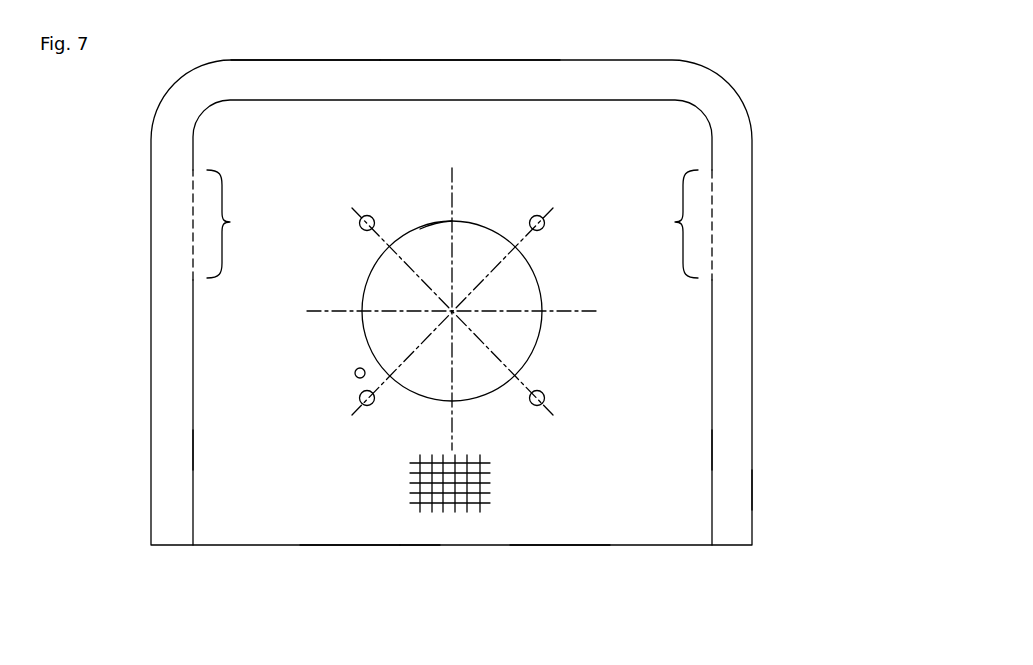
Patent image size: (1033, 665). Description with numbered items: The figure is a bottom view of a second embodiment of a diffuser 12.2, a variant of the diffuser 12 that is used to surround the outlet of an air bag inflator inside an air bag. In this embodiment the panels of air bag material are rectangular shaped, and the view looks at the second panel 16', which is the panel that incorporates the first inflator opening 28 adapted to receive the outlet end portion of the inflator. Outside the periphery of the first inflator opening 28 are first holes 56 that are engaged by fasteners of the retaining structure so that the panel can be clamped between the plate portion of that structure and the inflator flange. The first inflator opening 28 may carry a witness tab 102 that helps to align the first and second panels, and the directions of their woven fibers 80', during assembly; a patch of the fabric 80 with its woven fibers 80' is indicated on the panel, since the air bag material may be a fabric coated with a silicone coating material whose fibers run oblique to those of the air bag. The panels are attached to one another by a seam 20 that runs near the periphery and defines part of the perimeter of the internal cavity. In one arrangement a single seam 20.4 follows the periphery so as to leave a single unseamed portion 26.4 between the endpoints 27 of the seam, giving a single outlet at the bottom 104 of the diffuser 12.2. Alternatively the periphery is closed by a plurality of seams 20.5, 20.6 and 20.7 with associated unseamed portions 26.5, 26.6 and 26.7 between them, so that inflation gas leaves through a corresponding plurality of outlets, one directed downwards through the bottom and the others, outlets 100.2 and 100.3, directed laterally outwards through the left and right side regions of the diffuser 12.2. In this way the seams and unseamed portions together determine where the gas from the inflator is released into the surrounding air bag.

The diffuser 12 is at (511, 293).
The second embodiment of a diffuser 12.2 is at (766, 79).
The second panel 16' is at (786, 490).
The seam 20 is at (301, 100).
The single seam 20.4 is at (604, 100).
The seam 20.5 is at (371, 100).
The seam 20.6 is at (193, 430).
The seam 20.7 is at (712, 430).
The single unseamed portion 26.4 is at (338, 585).
The unseamed portion 26.5 is at (573, 585).
The unseamed portion 26.6 is at (242, 224).
The unseamed portion 26.7 is at (664, 224).
The endpoints of the seam 27 is at (193, 545).
The first inflator opening 28 is at (533, 281).
The first holes 56 is at (375, 218).
The fabric 80 is at (495, 483).
The woven fibers 80' is at (495, 483).
The outlet 100.2 is at (178, 260).
The outlet 100.3 is at (727, 259).
The witness tab 102 is at (425, 229).
The bottom of the diffuser 104 is at (421, 546).